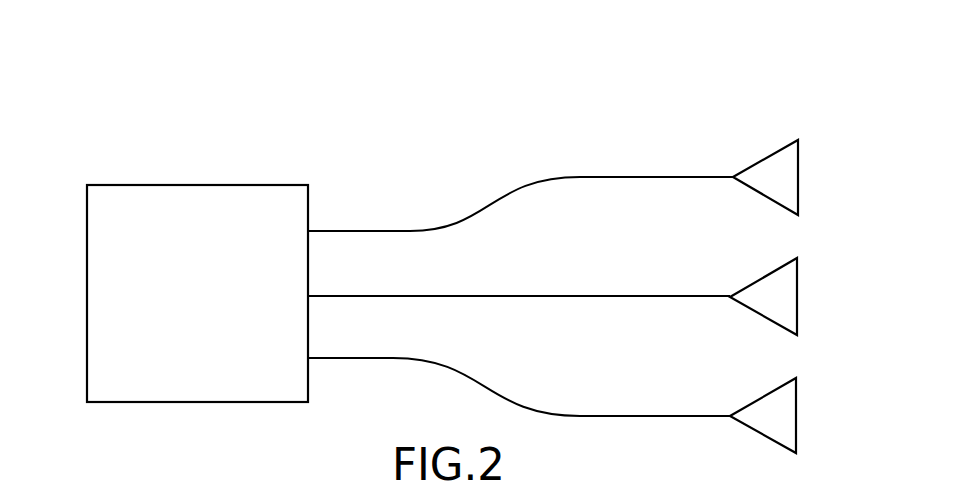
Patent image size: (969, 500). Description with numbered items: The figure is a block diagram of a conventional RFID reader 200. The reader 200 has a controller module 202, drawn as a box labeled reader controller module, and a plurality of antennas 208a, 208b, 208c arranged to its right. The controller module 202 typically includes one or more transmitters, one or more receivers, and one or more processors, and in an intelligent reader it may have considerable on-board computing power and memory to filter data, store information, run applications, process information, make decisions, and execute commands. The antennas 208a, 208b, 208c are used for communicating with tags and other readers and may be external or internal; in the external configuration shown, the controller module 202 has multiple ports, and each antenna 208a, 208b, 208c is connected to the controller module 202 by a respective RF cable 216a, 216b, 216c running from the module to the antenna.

The RFID reader 200 is at (97, 93).
The controller module 202 is at (238, 185).
The RF cable 216a is at (592, 177).
The RF cable 216b is at (592, 297).
The RF cable 216c is at (590, 416).
The antenna 208a is at (798, 177).
The antenna 208b is at (797, 297).
The antenna 208c is at (796, 416).